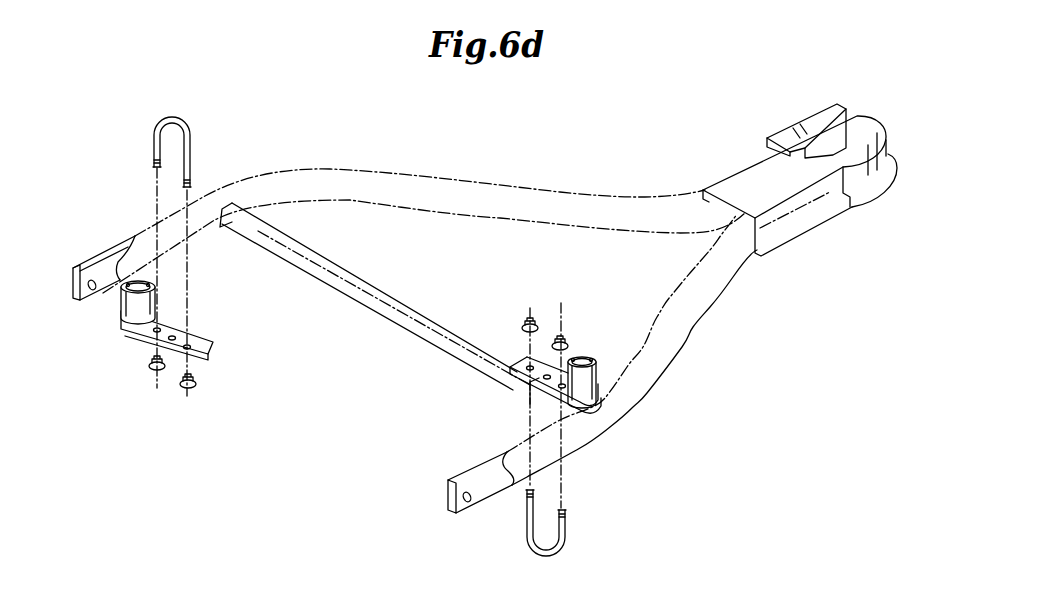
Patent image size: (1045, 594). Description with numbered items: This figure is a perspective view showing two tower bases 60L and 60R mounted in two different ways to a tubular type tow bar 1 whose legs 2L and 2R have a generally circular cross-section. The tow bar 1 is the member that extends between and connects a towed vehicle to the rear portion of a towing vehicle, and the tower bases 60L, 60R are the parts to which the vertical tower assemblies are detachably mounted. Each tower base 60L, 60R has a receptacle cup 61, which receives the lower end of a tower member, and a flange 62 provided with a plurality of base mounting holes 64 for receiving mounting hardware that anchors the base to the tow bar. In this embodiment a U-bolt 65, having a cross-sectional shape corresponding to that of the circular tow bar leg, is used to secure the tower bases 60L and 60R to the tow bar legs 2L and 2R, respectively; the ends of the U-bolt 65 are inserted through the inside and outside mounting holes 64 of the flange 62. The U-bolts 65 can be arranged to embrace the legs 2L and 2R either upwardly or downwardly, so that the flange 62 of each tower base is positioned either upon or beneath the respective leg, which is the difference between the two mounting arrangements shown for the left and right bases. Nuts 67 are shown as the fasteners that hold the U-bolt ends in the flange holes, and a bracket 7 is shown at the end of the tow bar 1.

The tow bar 1 is at (478, 183).
The left tow bar leg 2L is at (147, 207).
The right tow bar leg 2R is at (575, 472).
The channel bracket 7 is at (826, 128).
The left tower base 60L is at (120, 318).
The right tower base 60R is at (583, 414).
The receptacle cup 61 is at (152, 303).
The flange 62 is at (208, 343).
The base mounting holes 64 is at (185, 362).
The U-bolt 65 is at (176, 122).
The nut 67 is at (197, 390).